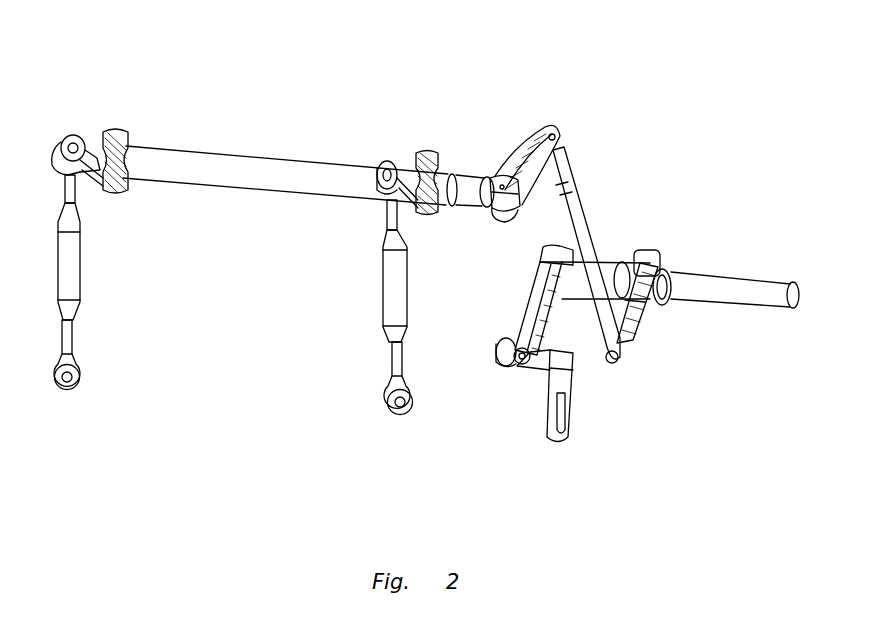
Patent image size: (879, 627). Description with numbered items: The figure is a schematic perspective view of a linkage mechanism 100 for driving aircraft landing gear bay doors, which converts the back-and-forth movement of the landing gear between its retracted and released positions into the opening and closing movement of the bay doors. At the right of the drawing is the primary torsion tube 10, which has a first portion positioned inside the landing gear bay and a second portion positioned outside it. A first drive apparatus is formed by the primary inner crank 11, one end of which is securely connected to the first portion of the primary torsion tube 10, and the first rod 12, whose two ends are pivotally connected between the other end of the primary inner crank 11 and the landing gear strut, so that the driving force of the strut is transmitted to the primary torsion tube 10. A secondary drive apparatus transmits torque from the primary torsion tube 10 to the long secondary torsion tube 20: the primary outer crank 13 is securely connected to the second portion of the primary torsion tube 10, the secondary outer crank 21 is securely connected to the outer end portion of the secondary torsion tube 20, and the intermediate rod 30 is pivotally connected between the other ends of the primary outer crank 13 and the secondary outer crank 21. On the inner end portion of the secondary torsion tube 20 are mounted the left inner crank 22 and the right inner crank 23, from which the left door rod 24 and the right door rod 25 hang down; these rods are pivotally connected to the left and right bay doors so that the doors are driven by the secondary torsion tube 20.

The linkage mechanism 100 is at (597, 148).
The primary torsion tube 10 is at (684, 271).
The primary inner crank 11 is at (533, 322).
The first rod 12 is at (572, 398).
The primary outer crank 13 is at (642, 250).
The secondary torsion tube 20 is at (262, 160).
The secondary outer crank 21 is at (512, 155).
The left inner crank 22 is at (92, 145).
The right inner crank 23 is at (408, 165).
The left door rod 24 is at (62, 238).
The right door rod 25 is at (400, 263).
The intermediate rod 30 is at (585, 226).